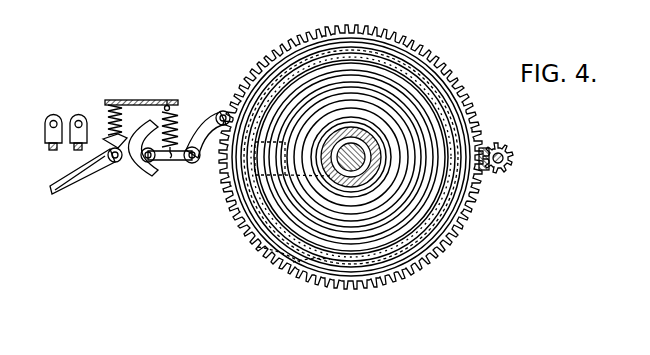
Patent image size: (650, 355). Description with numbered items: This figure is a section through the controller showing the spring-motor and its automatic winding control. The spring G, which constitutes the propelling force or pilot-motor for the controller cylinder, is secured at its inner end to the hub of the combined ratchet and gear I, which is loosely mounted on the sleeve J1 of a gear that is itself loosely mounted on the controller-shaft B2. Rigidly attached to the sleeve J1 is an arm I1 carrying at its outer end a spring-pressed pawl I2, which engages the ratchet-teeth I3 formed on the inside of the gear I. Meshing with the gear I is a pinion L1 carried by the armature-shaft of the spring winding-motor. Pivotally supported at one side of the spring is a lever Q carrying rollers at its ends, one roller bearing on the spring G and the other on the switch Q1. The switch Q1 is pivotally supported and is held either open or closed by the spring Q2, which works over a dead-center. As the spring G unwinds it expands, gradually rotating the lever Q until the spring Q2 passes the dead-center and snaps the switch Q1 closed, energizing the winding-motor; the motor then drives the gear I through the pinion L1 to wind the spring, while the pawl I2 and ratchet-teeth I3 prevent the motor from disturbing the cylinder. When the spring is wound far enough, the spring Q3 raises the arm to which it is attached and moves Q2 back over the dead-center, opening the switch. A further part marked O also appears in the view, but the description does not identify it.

The combined ratchet and gear I is at (350, 127).
The spring G is at (470, 213).
The controller-shaft B2 is at (364, 140).
The sleeve J1 is at (377, 147).
The arm I1 is at (258, 247).
The spring-pressed pawl I2 is at (250, 192).
The ratchet-teeth I3 is at (293, 262).
The pinion L1 is at (514, 158).
The lever Q is at (206, 121).
The switch Q1 is at (131, 167).
The spring Q2 is at (110, 113).
The spring Q3 is at (165, 124).
The contacts O is at (66, 75).